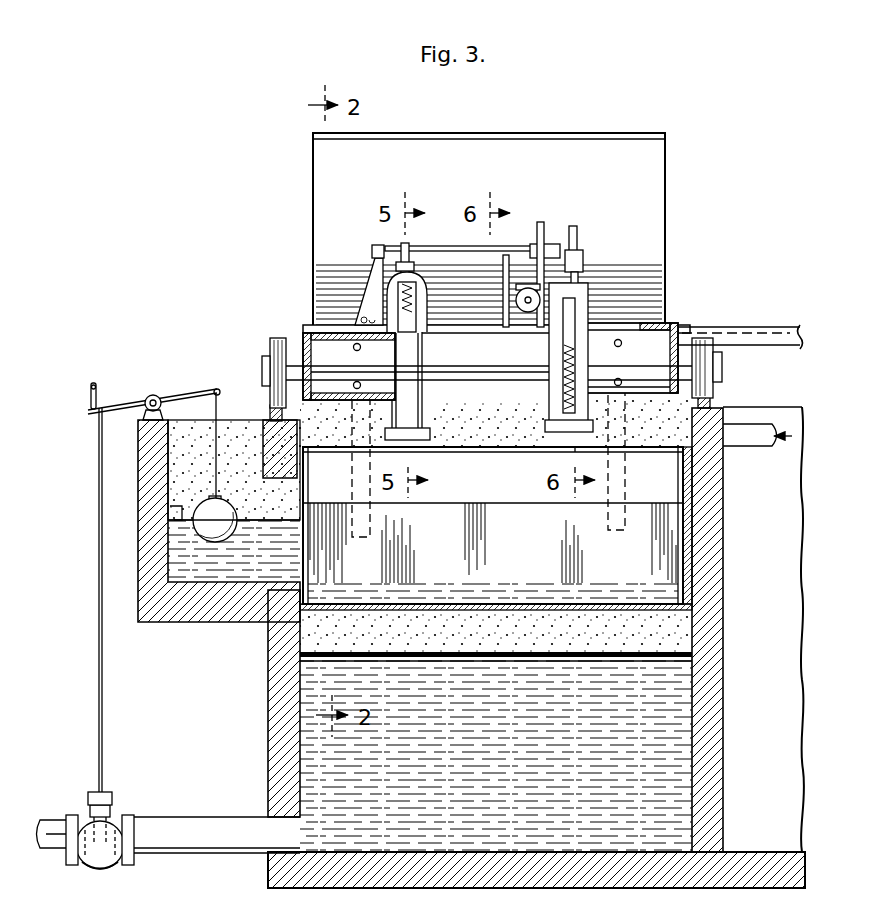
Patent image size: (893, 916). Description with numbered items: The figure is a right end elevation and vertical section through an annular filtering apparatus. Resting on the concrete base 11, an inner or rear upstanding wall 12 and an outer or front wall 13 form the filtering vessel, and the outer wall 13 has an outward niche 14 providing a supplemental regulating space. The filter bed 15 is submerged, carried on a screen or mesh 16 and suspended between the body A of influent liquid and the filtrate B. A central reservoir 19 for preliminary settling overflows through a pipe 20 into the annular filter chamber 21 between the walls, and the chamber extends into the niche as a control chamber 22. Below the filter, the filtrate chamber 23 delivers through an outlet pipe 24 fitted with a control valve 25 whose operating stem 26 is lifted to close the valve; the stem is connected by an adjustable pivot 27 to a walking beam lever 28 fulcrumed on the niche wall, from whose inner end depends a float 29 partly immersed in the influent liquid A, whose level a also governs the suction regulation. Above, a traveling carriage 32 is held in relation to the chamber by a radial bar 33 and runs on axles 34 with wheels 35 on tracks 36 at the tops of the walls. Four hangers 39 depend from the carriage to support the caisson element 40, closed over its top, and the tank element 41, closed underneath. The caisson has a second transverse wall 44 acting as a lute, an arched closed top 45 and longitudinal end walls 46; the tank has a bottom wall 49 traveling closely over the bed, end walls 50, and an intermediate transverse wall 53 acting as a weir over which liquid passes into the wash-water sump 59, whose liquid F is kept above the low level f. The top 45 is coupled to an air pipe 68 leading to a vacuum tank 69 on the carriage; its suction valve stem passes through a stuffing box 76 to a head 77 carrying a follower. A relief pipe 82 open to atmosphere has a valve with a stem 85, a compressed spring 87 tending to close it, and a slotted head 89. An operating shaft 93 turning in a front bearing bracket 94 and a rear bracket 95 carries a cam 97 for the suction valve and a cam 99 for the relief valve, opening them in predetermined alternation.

The concrete base 11 is at (765, 852).
The inner or rear upstanding wall 12 is at (712, 716).
The outer or front wall 13 is at (268, 685).
The outward extension or niche 14 is at (149, 564).
The filter bed 15 is at (700, 628).
The screen or mesh 16 is at (692, 641).
The central reservoir 19 is at (788, 566).
The overflow pipe 20 is at (752, 426).
The filter chamber 21 is at (640, 421).
The control chamber 22 is at (193, 433).
The filtrate chamber 23 is at (702, 677).
The outlet pipe 24 is at (225, 826).
The control valve 25 is at (88, 818).
The operating stem 26 is at (99, 712).
The adjustable pivot 27 is at (98, 406).
The walking beam lever 28 is at (190, 398).
The float 29 is at (229, 503).
The traveling carriage 32 is at (676, 337).
The radial beam or bar 33 is at (762, 320).
The axles 34 is at (333, 370).
The wheels 35 is at (281, 350).
The tracks 36 is at (270, 412).
The depending legs or hangers 39 is at (352, 403).
The caisson element 40 is at (446, 492).
The tank element 41 is at (680, 560).
The second transverse wall 44 is at (522, 492).
The closed top 45 is at (492, 478).
The longitudinal walls 46 is at (692, 464).
The bottom wall 49 is at (600, 600).
The end walls 50 is at (690, 530).
The intermediate transverse wall 53 is at (506, 559).
The receiving chamber or wash-water tank 59 is at (342, 600).
The air pipe 68 is at (420, 410).
The vacuum tank 69 is at (367, 190).
The stuffing box 76 is at (407, 302).
The head 77 is at (416, 266).
The relief pipe 82 is at (575, 450).
The stem 85 is at (562, 342).
The compressed spring 87 is at (542, 403).
The head 89 is at (583, 251).
The operating shaft 93 is at (463, 246).
The front bearing bracket 94 is at (371, 273).
The rear bracket 95 is at (544, 238).
The cam 97 is at (410, 250).
The cam 99 is at (583, 226).
The body of influent liquid A is at (212, 578).
The filtrate B is at (300, 744).
The liquid in compartment F is at (535, 593).
The water level a is at (168, 507).
The low level f is at (440, 596).